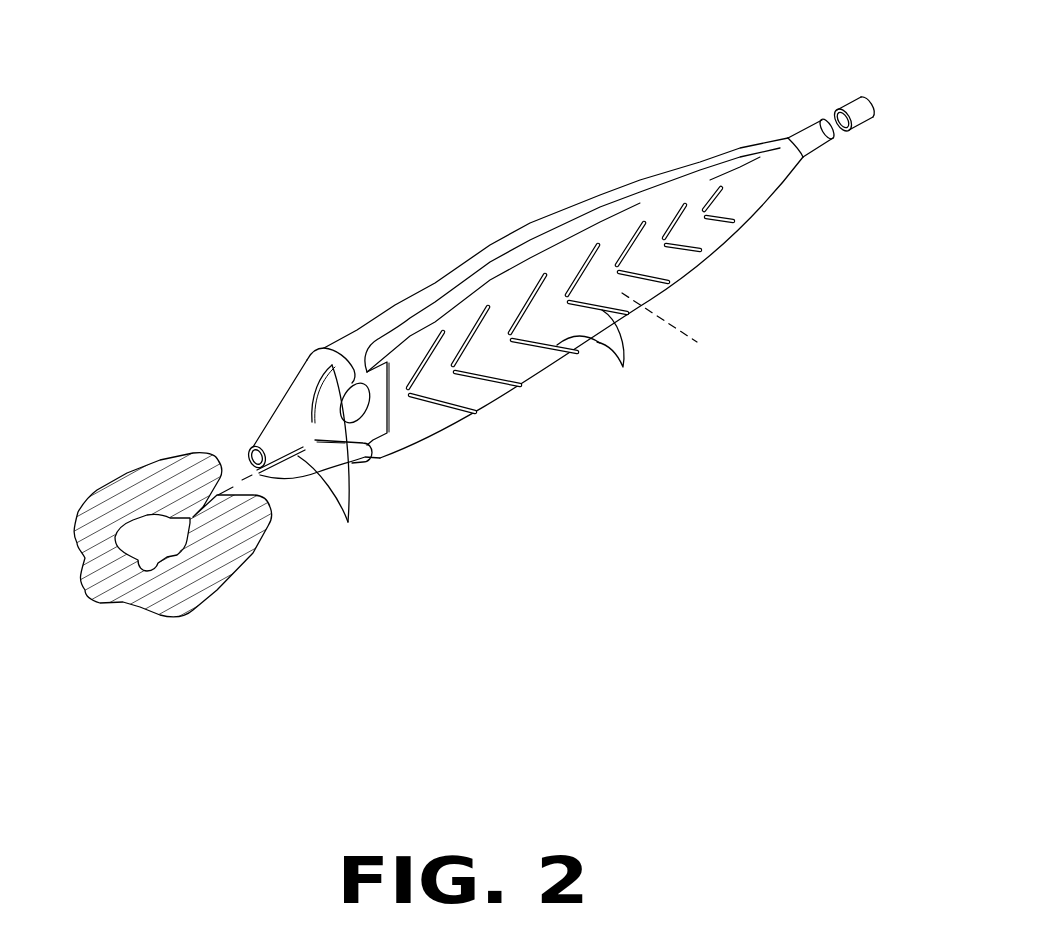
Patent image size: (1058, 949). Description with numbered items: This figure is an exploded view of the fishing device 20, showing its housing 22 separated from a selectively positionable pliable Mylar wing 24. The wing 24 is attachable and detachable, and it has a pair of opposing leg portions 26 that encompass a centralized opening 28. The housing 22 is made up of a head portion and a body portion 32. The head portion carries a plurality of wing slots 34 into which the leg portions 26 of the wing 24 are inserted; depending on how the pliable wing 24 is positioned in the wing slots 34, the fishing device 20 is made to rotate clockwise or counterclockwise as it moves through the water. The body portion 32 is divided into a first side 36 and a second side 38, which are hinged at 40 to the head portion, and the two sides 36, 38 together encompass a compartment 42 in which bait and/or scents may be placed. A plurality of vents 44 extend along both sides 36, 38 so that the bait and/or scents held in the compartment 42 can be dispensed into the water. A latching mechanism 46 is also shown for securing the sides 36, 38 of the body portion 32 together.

The fishing device 20 is at (507, 213).
The housing 22 is at (587, 195).
The pliable Mylar wing 24 is at (115, 470).
The leg portions 26 is at (183, 470).
The centralized opening 28 is at (163, 563).
The body portion 32 is at (655, 163).
The wing slots 34 is at (332, 460).
The first side 36 is at (433, 283).
The second side 38 is at (532, 374).
The hinge 40 is at (387, 400).
The compartment 42 is at (678, 330).
The vents 44 is at (598, 354).
The latching mechanism 46 is at (845, 95).